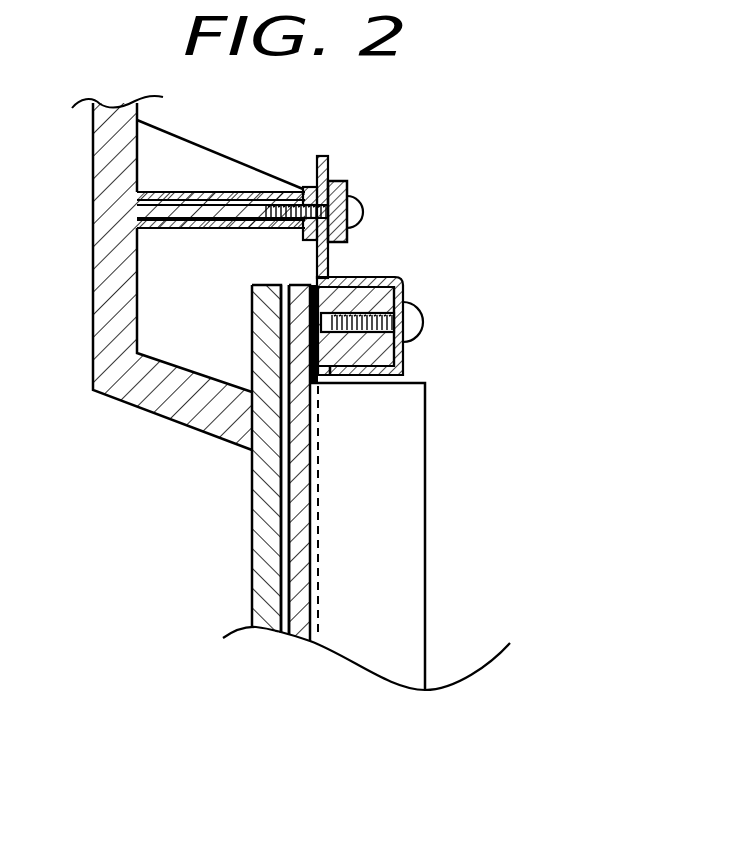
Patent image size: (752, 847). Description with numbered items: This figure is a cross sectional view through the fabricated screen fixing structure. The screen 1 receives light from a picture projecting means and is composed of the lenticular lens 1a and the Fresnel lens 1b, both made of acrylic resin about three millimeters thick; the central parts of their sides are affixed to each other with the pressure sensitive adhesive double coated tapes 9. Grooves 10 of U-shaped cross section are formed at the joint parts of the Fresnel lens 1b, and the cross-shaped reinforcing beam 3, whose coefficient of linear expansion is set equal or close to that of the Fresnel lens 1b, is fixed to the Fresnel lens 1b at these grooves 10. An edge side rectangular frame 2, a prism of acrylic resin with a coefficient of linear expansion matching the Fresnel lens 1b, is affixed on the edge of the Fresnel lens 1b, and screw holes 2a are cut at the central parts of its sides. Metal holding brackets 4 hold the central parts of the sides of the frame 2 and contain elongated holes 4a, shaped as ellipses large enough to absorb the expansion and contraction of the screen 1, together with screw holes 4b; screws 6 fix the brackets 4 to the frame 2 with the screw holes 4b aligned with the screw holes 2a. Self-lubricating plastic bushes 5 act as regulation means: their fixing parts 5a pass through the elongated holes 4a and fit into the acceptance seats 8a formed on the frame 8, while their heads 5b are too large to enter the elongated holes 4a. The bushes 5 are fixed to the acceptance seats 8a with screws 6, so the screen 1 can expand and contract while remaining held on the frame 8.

The screen 1 is at (223, 463).
The lenticular lens 1a is at (263, 550).
The Fresnel lens 1b is at (293, 580).
The edge side rectangular frame 2 is at (417, 373).
The screw holes 2a is at (340, 376).
The reinforcing beam 3 is at (425, 570).
The holding brackets 4 is at (352, 249).
The elongated holes 4a is at (318, 175).
The screw holes 4b is at (427, 332).
The bushes 5 is at (291, 186).
The fixing parts 5a is at (300, 188).
The heads 5b is at (340, 185).
The screws 6 is at (367, 207).
The frame 8 is at (96, 195).
The acceptance seats 8a is at (170, 232).
The pressure sensitive adhesive double coated tapes 9 is at (282, 331).
The grooves 10 is at (310, 283).